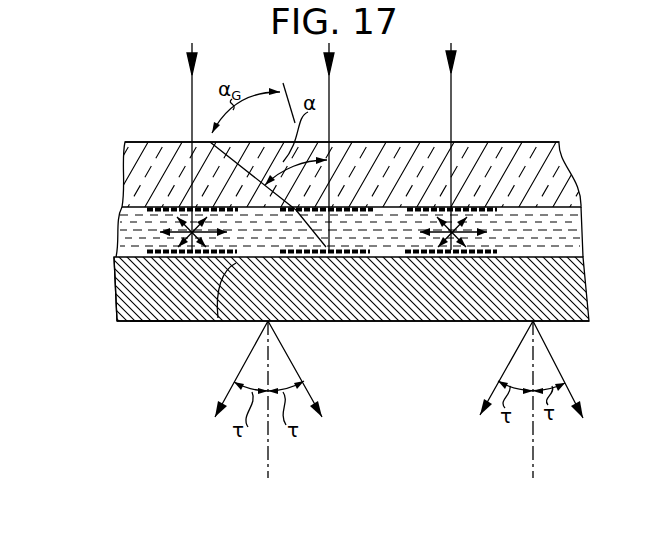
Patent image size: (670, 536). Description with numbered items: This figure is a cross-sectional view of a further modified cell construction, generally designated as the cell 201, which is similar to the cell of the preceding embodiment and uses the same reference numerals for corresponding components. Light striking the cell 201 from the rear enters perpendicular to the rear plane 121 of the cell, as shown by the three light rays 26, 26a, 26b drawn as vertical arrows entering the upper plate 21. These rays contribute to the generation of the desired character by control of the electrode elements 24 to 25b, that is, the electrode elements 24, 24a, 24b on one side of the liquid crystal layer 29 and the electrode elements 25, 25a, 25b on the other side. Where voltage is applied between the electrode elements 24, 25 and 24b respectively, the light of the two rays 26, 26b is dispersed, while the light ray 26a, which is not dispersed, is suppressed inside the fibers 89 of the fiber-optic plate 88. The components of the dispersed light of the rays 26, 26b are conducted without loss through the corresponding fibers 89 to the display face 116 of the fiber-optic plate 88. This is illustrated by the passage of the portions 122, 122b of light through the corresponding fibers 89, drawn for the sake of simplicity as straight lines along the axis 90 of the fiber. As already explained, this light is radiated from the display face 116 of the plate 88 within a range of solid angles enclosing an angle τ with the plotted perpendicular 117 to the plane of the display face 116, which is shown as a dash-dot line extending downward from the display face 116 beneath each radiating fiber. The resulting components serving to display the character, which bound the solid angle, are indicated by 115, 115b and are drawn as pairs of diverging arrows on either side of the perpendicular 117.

The cell 201 is at (116, 149).
The upper transparent plate 21 is at (137, 178).
The rear plane 121 is at (530, 143).
The liquid crystal layer 29 is at (560, 230).
The electrode element 24 is at (462, 215).
The electrode element 24a is at (365, 207).
The electrode element 24b is at (163, 207).
The electrode element 25 is at (498, 248).
The electrode element 25a is at (378, 248).
The electrode element 25b is at (157, 250).
The portion of light 122 is at (517, 315).
The portion of light 122b is at (218, 320).
The fibers 89 is at (454, 321).
The fiber-optic plate 88 is at (110, 306).
The display face 116 is at (144, 328).
The light ray 26 is at (455, 78).
The light ray 26a is at (332, 80).
The light ray 26b is at (190, 76).
The axis of the fiber 90 is at (206, 130).
The component of displayed light 115 is at (480, 388).
The component of displayed light 115b is at (215, 412).
The perpendicular 117 is at (270, 462).